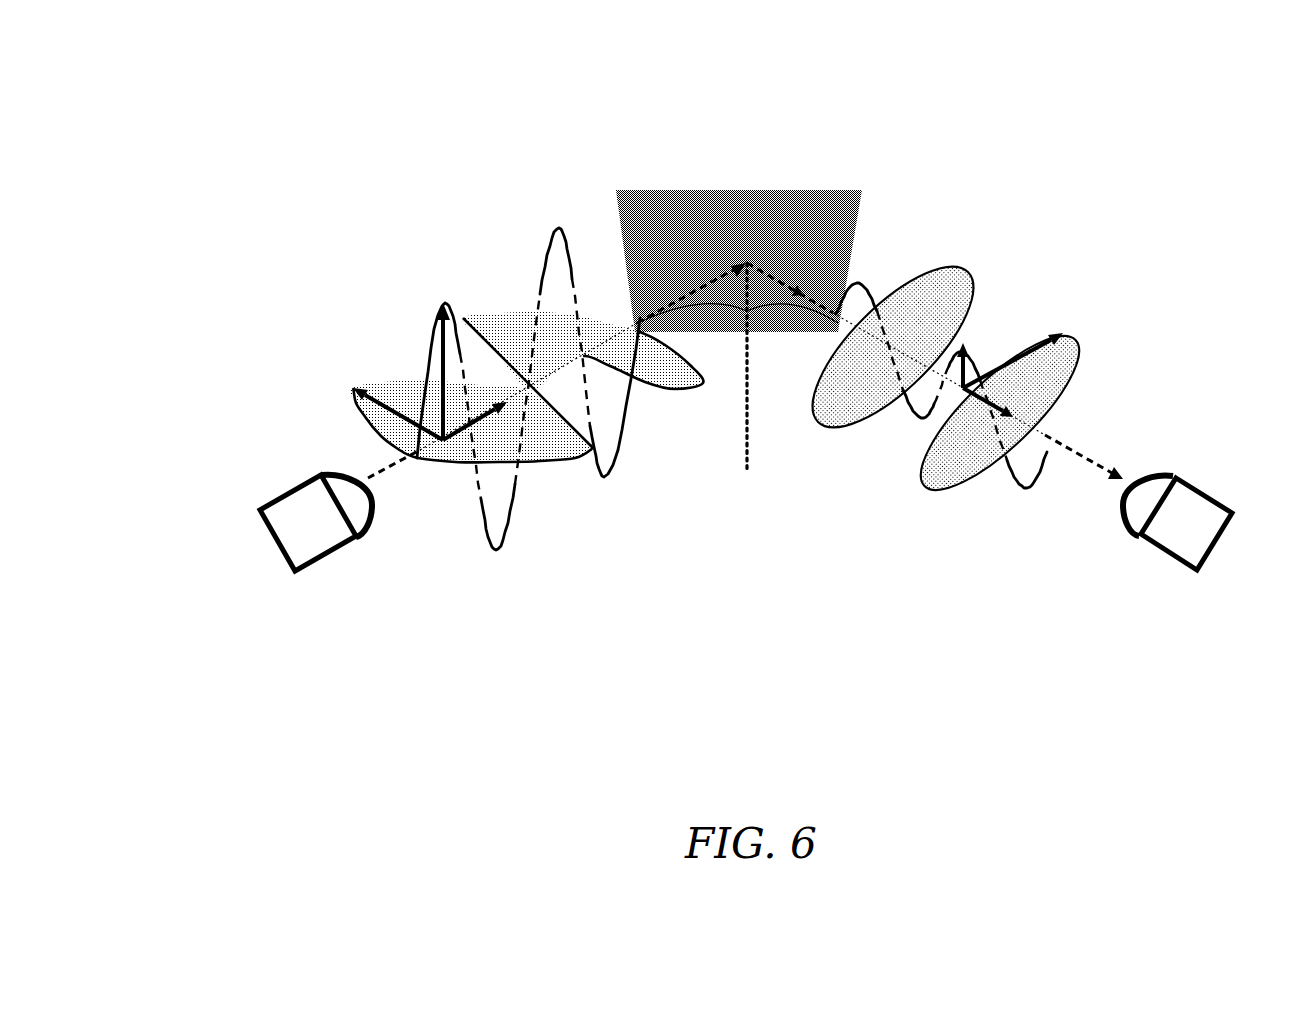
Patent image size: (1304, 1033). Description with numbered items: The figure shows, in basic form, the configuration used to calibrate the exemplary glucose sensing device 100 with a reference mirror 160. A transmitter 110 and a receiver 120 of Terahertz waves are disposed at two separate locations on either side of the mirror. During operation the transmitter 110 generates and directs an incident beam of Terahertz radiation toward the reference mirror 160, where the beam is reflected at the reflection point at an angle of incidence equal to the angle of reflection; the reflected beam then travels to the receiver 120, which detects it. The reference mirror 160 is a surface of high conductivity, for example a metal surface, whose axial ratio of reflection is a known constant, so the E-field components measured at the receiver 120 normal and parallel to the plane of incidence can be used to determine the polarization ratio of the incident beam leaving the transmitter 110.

The glucose sensing device 100 is at (1110, 69).
The transmitter (TX) 110 is at (287, 522).
The receiver (RX) 120 is at (1173, 540).
The reference mirror 160 is at (615, 203).